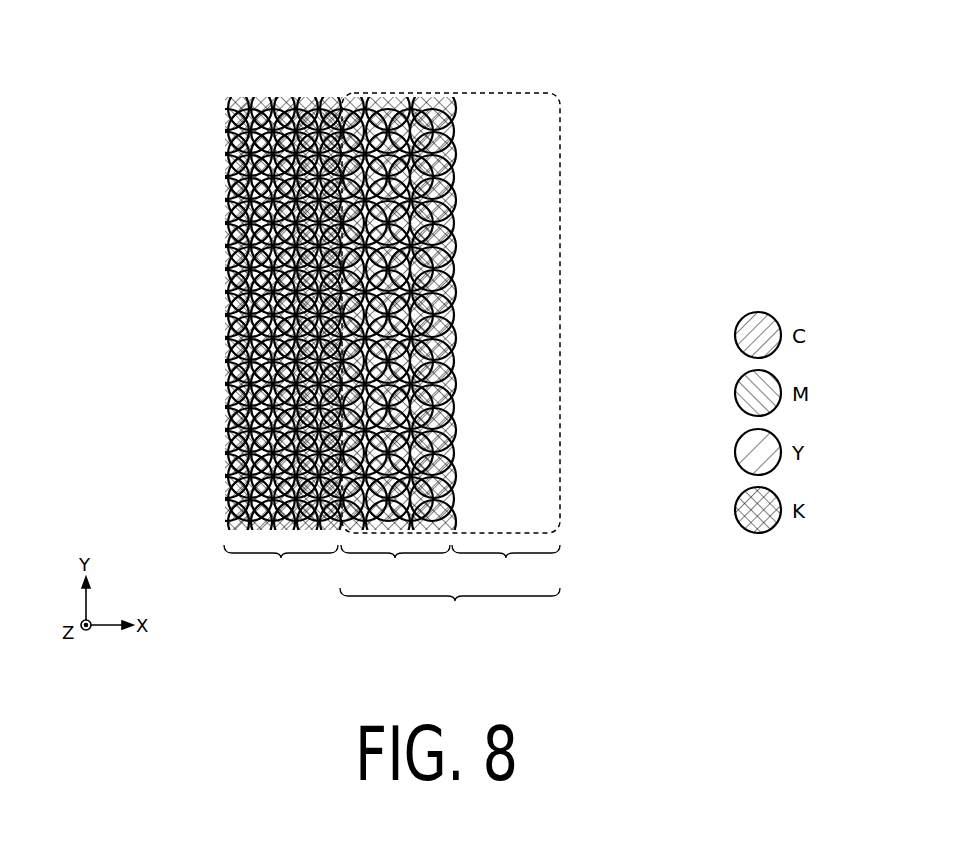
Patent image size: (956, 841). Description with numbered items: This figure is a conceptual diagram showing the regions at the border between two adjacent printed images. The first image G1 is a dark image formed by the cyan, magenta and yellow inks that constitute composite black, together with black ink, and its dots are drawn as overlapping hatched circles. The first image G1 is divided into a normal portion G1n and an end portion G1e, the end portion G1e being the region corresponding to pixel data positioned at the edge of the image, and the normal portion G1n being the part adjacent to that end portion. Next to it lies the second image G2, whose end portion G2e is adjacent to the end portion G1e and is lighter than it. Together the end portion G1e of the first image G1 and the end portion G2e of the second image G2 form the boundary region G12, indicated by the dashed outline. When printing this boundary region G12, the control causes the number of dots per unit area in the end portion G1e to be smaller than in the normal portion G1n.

The first image G1 is at (301, 100).
The second image G2 is at (523, 100).
The boundary region G12 is at (471, 93).
The normal portion of the first image G1n is at (281, 566).
The end portion of the first image G1e is at (395, 566).
The end portion of the second image G2e is at (506, 566).